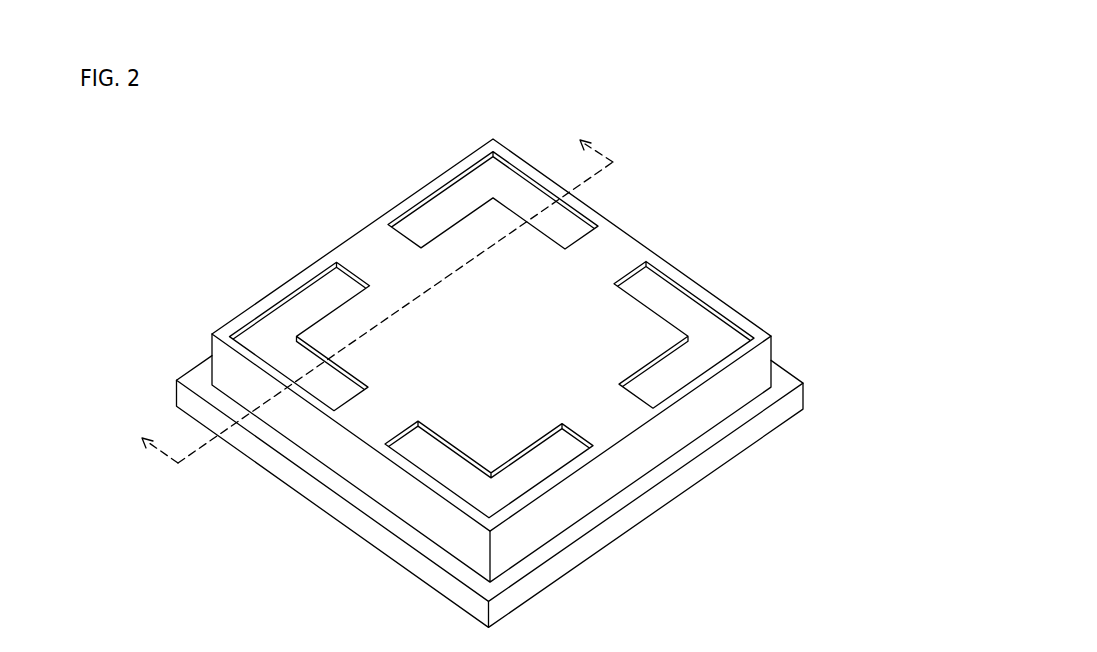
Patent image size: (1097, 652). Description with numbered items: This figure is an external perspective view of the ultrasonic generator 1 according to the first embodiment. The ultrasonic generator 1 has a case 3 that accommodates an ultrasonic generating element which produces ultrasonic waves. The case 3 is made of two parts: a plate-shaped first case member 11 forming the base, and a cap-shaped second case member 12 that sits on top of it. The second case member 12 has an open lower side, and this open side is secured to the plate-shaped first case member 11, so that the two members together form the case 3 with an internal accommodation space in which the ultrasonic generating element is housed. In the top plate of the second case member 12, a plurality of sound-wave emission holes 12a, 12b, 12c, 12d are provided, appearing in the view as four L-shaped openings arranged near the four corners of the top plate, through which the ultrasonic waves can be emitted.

The ultrasonic generator 1 is at (242, 251).
The case 3 is at (661, 579).
The first case member 11 is at (542, 593).
The second case member 12 is at (570, 529).
The sound-wave emission hole 12a is at (318, 378).
The sound-wave emission hole 12b is at (562, 452).
The sound-wave emission hole 12c is at (660, 296).
The sound-wave emission hole 12d is at (442, 207).